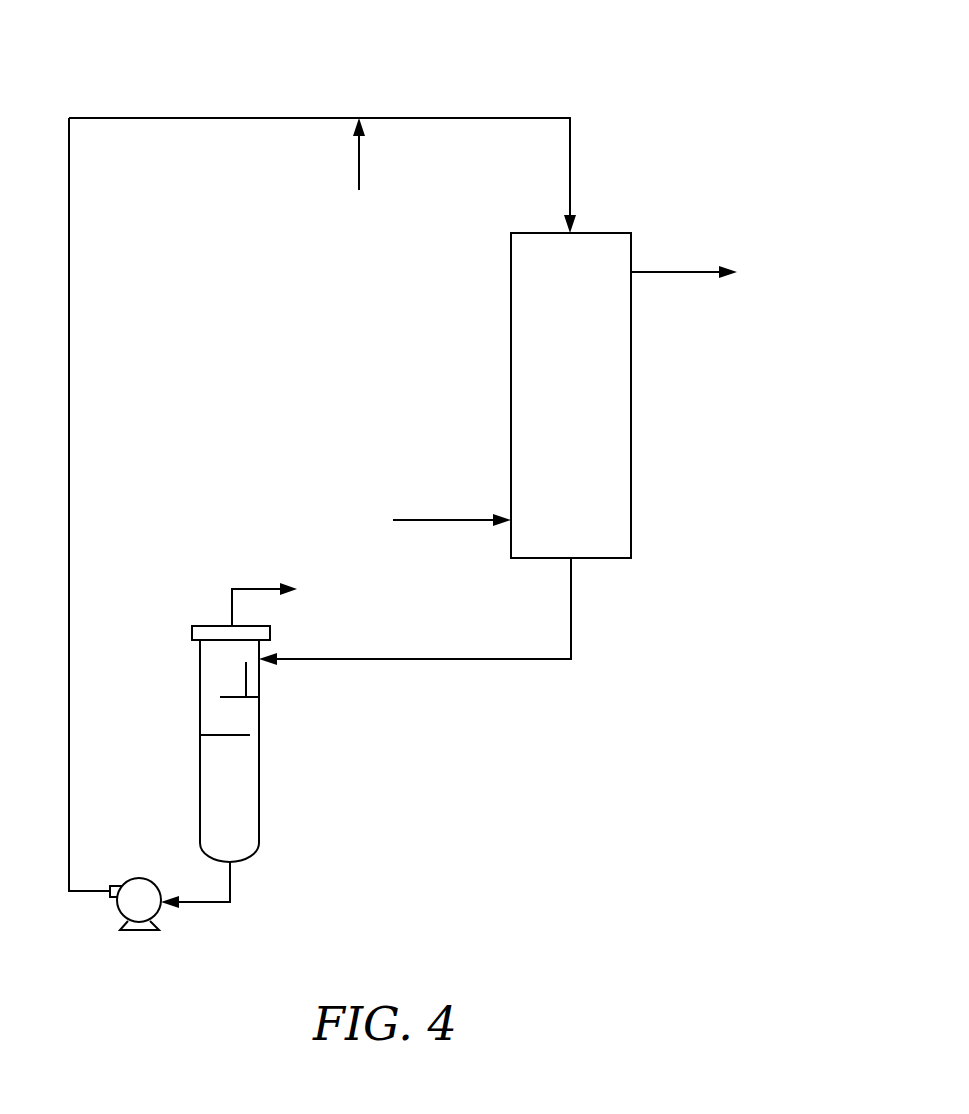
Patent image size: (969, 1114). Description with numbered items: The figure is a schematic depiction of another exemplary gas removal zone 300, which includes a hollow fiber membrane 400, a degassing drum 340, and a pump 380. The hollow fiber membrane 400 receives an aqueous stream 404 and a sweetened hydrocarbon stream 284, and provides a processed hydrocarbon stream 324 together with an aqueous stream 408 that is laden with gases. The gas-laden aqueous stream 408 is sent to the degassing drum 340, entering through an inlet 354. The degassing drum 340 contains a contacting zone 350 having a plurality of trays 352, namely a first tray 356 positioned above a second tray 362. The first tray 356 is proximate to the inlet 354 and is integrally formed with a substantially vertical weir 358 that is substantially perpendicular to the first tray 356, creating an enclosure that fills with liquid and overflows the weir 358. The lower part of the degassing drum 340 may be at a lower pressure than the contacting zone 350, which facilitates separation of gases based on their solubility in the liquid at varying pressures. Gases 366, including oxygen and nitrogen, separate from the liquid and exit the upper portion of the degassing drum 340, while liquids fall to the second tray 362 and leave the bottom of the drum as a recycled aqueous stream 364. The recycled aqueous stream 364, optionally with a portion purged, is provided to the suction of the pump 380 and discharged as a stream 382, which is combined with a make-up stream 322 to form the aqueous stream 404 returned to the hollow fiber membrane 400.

The gas removal zone 300 is at (728, 52).
The aqueous stream 404 is at (469, 118).
The make-up stream 322 is at (359, 172).
The hollow fiber membrane 400 is at (631, 386).
The hydrocarbon stream 324 is at (685, 270).
The sweetened hydrocarbon stream 284 is at (453, 518).
The aqueous stream 408 is at (571, 608).
The pump discharge 382 is at (69, 438).
The trays 352 is at (159, 603).
The gases 366 is at (259, 588).
The inlet 354 is at (261, 657).
The contacting zone 350 is at (208, 665).
The degassing drum 340 is at (259, 808).
The weir 358 is at (246, 680).
The first tray 356 is at (225, 698).
The second tray 362 is at (226, 737).
The recycled aqueous stream 364 is at (213, 903).
The pump 380 is at (140, 878).